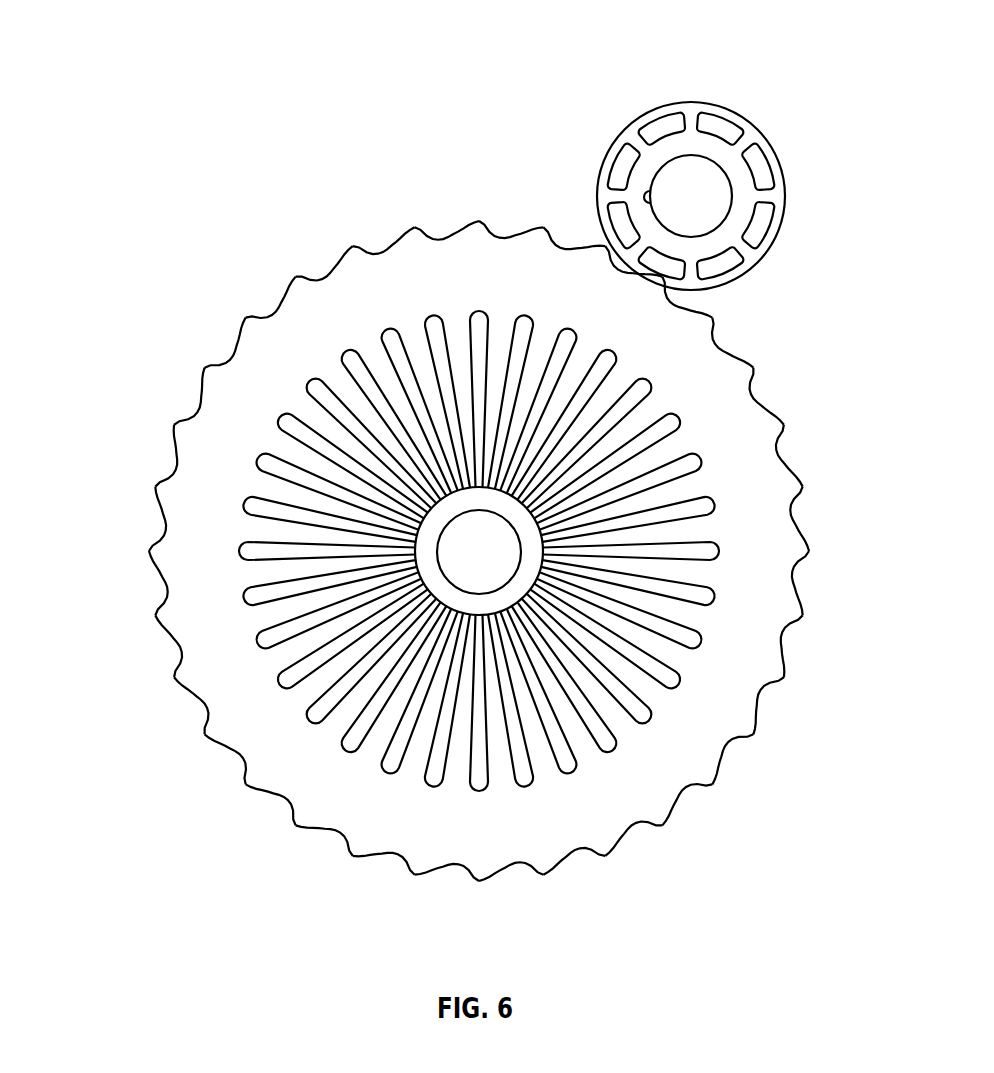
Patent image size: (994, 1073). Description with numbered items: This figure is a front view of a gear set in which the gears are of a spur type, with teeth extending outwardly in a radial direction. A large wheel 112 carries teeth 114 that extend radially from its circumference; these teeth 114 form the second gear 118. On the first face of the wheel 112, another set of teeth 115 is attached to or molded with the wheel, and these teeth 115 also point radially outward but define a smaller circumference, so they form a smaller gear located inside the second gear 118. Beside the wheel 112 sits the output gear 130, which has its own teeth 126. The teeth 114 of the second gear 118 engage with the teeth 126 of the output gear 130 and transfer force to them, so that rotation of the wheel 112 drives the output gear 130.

The wheel 112 is at (439, 582).
The teeth 114 is at (297, 820).
The teeth 115 is at (270, 637).
The second gear 118 is at (341, 321).
The teeth 126 is at (603, 167).
The output gear 130 is at (661, 146).